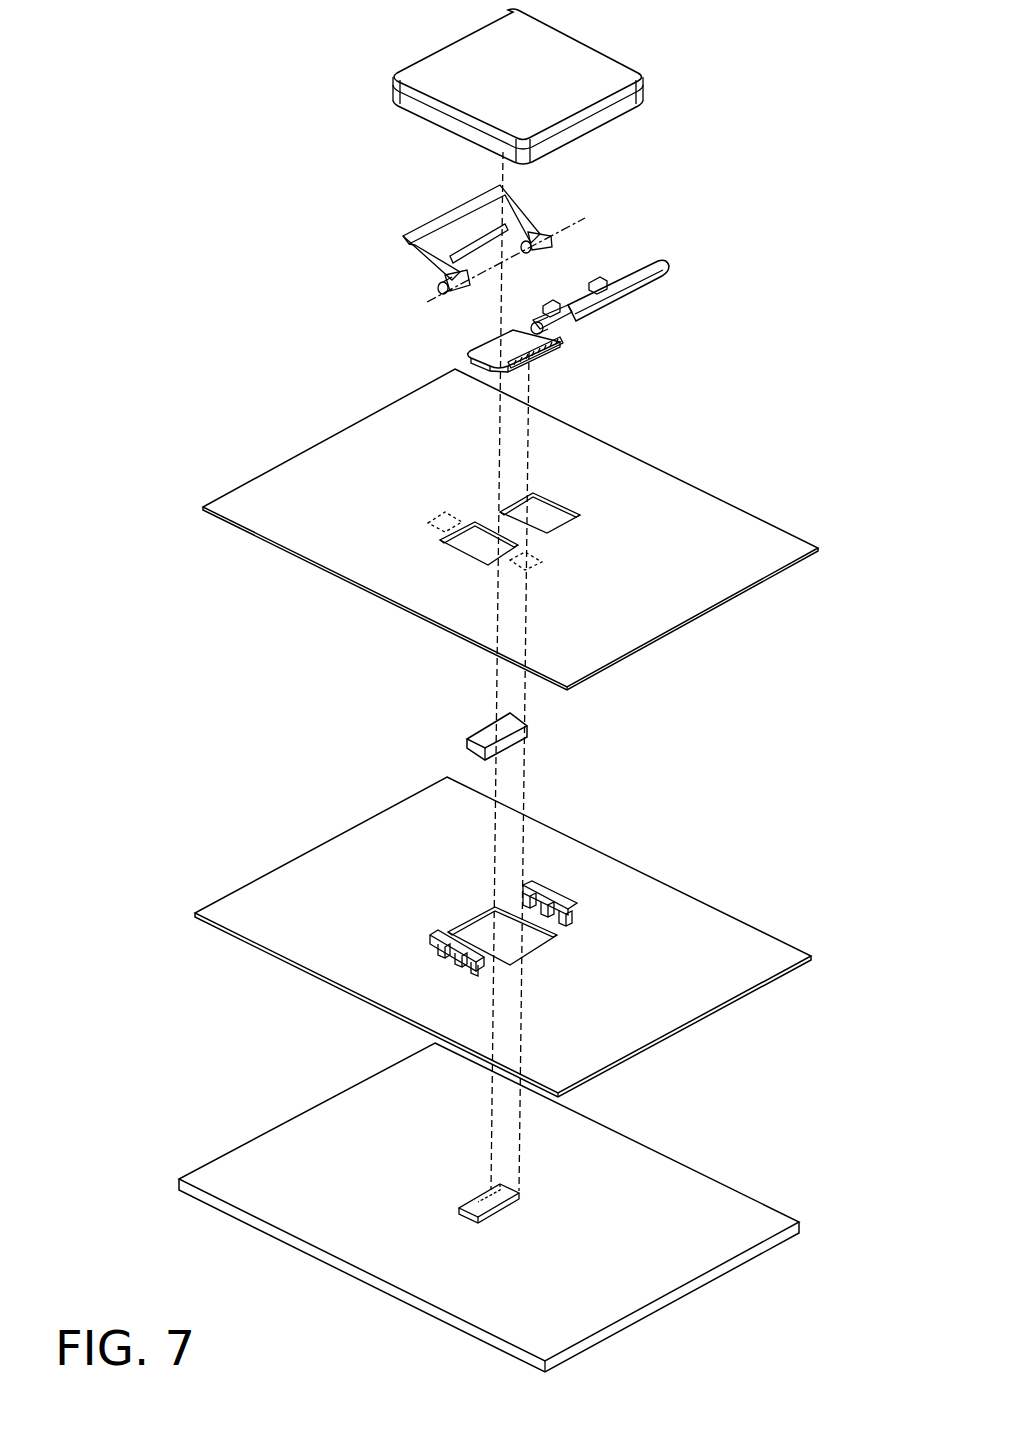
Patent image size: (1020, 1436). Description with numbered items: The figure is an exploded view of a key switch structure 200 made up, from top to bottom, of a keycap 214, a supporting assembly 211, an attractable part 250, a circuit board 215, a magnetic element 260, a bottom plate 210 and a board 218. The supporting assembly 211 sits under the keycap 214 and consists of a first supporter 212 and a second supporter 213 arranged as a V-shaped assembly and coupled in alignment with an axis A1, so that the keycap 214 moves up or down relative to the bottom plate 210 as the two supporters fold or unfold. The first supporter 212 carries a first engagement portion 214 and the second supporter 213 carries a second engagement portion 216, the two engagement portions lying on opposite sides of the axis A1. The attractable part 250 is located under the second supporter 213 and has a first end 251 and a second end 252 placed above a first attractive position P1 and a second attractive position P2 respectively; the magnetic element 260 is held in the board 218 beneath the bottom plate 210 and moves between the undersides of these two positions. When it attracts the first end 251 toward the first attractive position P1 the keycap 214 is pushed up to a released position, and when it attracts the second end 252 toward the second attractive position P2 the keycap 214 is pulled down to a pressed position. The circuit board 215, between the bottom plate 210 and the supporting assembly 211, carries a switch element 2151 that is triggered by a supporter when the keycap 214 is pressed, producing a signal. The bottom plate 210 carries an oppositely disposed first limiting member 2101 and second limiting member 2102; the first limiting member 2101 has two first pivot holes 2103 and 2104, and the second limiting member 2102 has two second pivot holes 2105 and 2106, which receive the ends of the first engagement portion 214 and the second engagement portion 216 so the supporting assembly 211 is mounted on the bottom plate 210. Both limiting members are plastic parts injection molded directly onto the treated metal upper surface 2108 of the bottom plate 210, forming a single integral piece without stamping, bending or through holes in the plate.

The key switch structure 200 is at (124, 25).
The bottom plate 210 is at (503, 936).
The supporting assembly 211 is at (553, 262).
The first supporter 212 is at (432, 220).
The second supporter 213 is at (612, 305).
The keycap 214 is at (563, 57).
The circuit board 215 is at (510, 529).
The second engagement portion 216 is at (533, 327).
The board 218 is at (685, 1165).
The attractable part 250 is at (529, 361).
The first end 251 is at (488, 352).
The second end 252 is at (557, 351).
The magnetic element 260 is at (508, 739).
The first limiting member 2101 is at (442, 937).
The second limiting member 2102 is at (604, 850).
The first pivot hole 2103 is at (394, 993).
The first pivot hole 2104 is at (468, 964).
The second pivot hole 2105 is at (531, 885).
The second pivot hole 2106 is at (555, 911).
The upper surface 2108 is at (662, 1004).
The switch element 2151 is at (425, 593).
The axis A1 is at (522, 251).
The first attractive position P1 is at (497, 520).
The second attractive position P2 is at (527, 533).